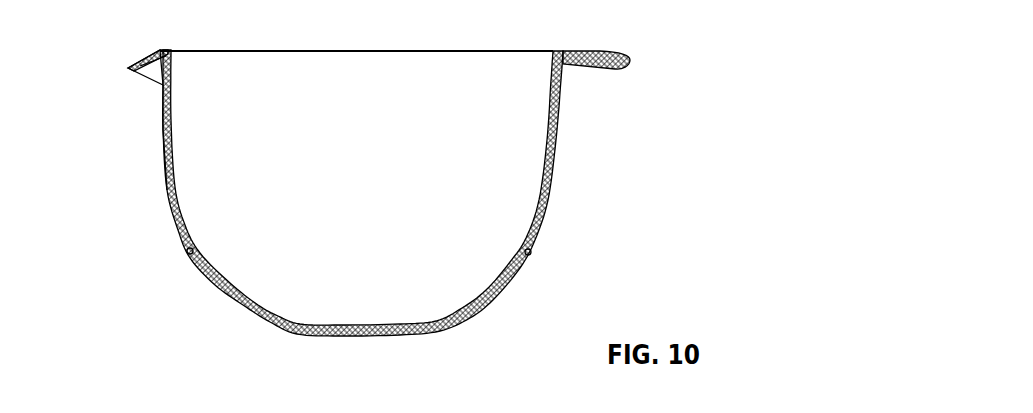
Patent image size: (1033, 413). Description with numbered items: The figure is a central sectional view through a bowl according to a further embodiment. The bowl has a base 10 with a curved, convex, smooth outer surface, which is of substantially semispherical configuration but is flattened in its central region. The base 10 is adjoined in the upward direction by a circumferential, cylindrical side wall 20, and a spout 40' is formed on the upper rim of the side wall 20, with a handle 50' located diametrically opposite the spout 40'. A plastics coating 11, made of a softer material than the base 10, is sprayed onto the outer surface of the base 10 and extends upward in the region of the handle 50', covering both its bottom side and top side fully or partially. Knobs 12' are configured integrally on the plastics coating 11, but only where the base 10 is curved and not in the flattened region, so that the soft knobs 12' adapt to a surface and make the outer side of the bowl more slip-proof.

The base 10 is at (513, 275).
The plastics coating 11 is at (540, 228).
The knobs 12' is at (148, 282).
The side wall 20 is at (163, 123).
The spout 40' is at (99, 76).
The handle 50' is at (630, 64).